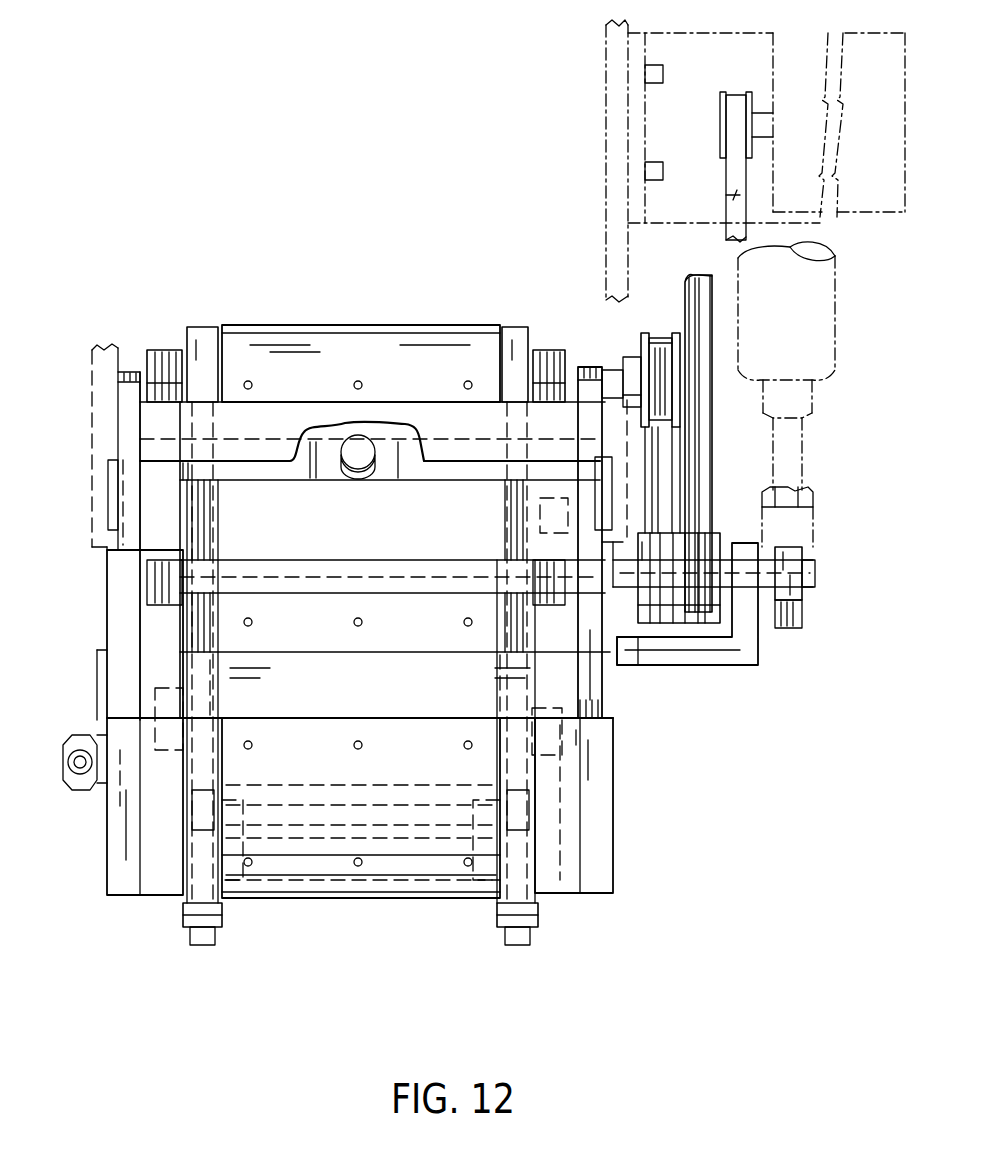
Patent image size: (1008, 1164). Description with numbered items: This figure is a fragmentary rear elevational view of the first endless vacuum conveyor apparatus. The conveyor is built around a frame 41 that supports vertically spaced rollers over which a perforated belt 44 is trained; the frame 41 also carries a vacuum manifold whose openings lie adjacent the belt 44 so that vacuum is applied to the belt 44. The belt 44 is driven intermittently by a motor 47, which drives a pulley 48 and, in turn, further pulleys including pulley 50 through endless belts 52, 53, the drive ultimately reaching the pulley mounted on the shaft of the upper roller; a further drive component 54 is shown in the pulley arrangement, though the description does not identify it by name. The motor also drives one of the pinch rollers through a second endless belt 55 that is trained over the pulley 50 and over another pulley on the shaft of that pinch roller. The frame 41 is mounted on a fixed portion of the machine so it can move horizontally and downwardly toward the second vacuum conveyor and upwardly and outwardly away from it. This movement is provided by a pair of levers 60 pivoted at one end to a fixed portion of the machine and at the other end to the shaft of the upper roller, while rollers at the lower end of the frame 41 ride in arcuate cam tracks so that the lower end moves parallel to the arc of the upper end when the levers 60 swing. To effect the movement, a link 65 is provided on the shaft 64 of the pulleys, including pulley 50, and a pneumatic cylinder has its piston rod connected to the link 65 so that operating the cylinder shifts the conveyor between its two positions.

The frame 41 is at (118, 852).
The perforated belt 44 is at (400, 337).
The motor 47 is at (842, 217).
The pulley 48 is at (718, 112).
The pulley 50 is at (683, 610).
The endless belt 52 is at (690, 282).
The endless belt 53 is at (682, 470).
The disc 54 is at (641, 340).
The second endless belt 55 is at (718, 210).
The levers 60 is at (165, 352).
The shaft 64 is at (818, 578).
The link 65 is at (793, 628).